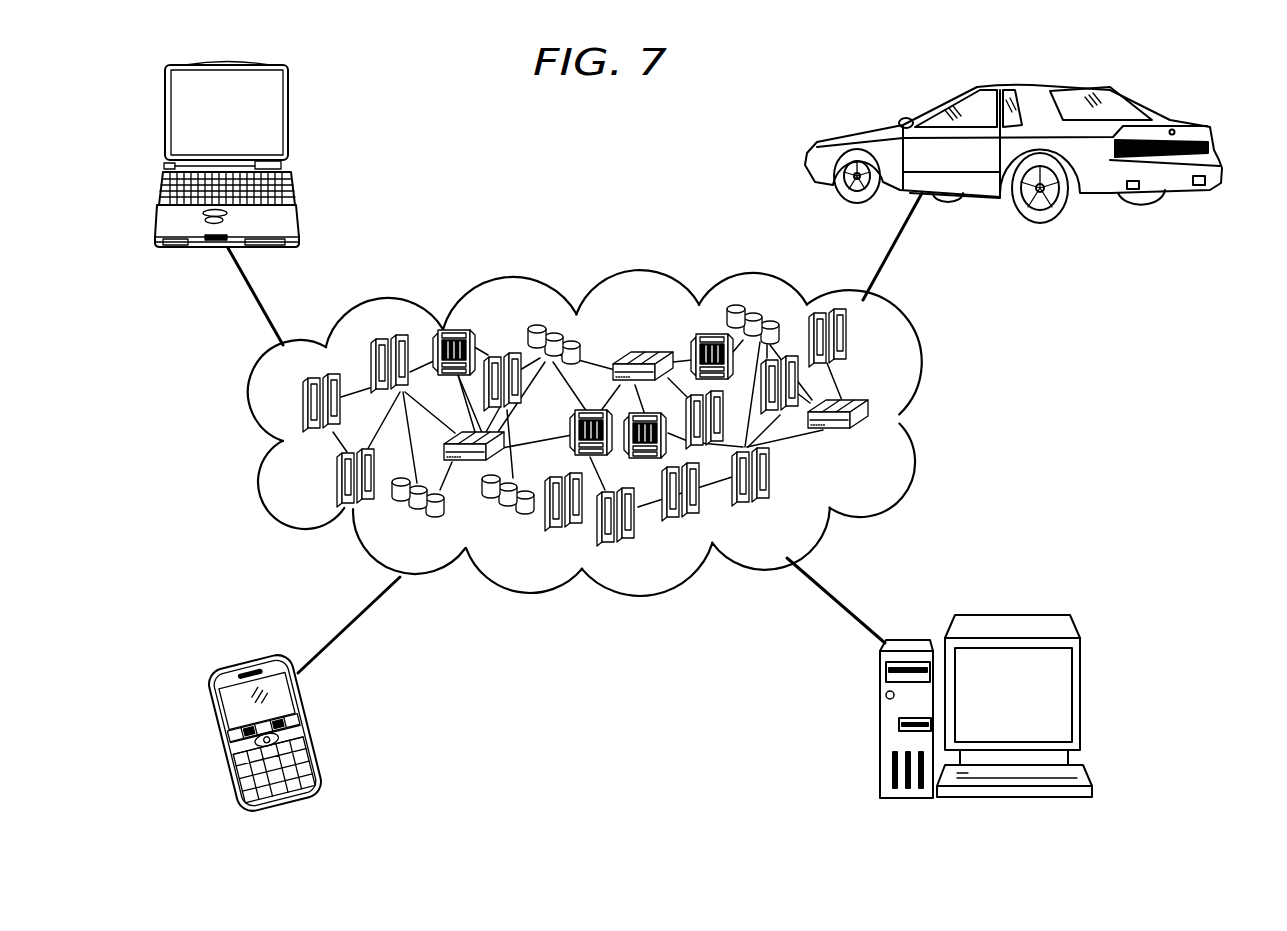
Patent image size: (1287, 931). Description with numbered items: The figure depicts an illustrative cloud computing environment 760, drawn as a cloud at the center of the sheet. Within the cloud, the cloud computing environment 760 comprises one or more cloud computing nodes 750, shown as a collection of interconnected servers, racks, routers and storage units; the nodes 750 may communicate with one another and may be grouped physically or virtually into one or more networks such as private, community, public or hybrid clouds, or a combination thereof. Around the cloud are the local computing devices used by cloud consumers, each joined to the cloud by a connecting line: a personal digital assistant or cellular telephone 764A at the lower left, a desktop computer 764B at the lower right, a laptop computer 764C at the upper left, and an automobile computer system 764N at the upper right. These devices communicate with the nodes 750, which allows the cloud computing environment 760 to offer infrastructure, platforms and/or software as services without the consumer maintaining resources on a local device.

The cloud computing nodes 750 is at (878, 441).
The cloud computing environment 760 is at (918, 358).
The cellular telephone 764A is at (207, 720).
The desktop computer 764B is at (1013, 613).
The laptop computer 764C is at (162, 108).
The automobile computer system 764N is at (1183, 122).